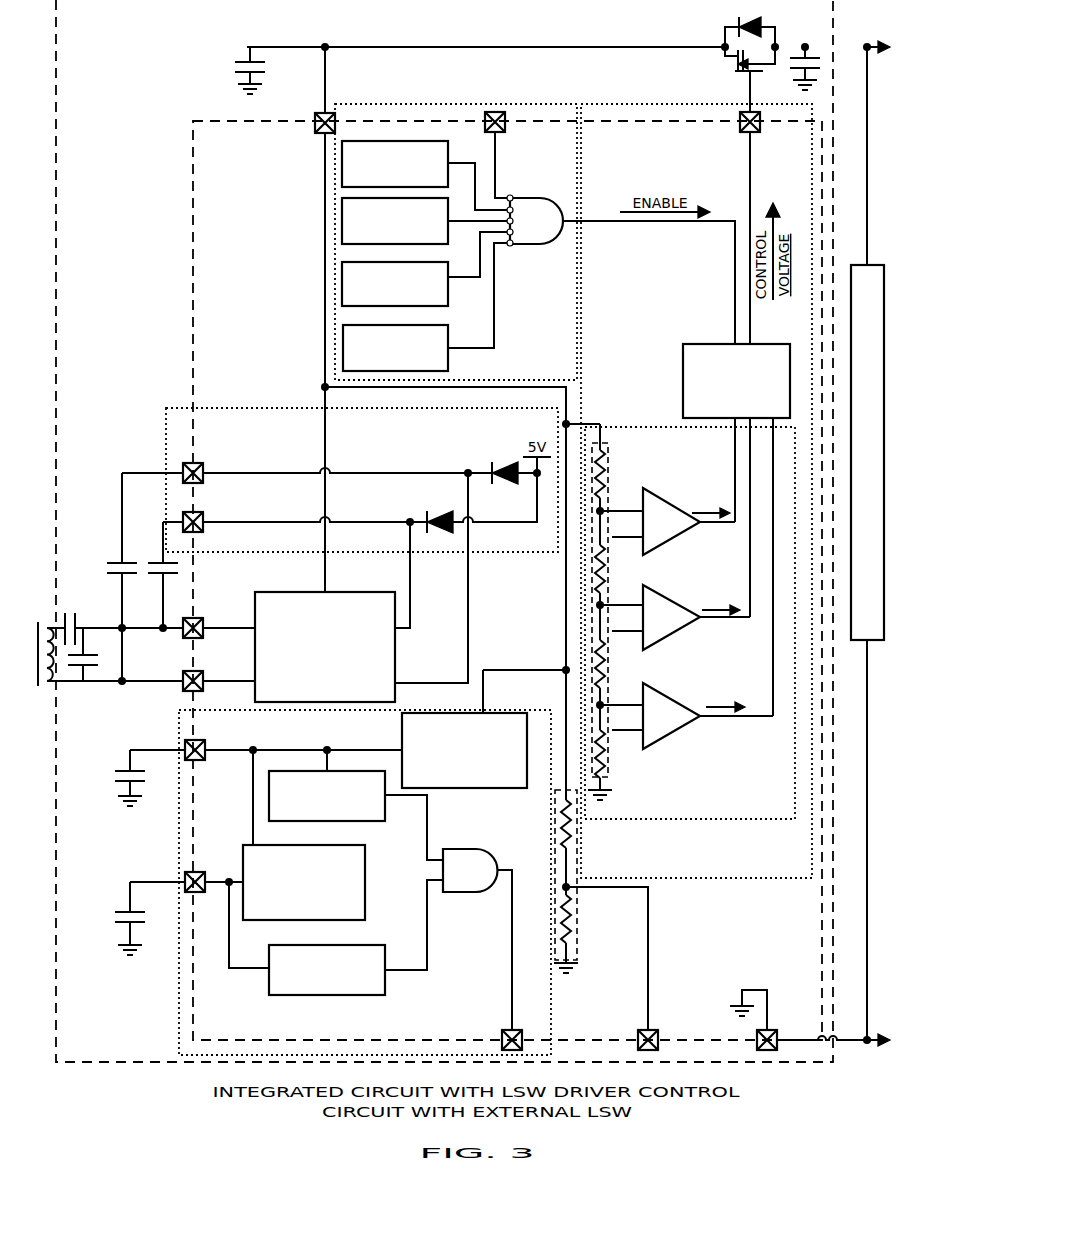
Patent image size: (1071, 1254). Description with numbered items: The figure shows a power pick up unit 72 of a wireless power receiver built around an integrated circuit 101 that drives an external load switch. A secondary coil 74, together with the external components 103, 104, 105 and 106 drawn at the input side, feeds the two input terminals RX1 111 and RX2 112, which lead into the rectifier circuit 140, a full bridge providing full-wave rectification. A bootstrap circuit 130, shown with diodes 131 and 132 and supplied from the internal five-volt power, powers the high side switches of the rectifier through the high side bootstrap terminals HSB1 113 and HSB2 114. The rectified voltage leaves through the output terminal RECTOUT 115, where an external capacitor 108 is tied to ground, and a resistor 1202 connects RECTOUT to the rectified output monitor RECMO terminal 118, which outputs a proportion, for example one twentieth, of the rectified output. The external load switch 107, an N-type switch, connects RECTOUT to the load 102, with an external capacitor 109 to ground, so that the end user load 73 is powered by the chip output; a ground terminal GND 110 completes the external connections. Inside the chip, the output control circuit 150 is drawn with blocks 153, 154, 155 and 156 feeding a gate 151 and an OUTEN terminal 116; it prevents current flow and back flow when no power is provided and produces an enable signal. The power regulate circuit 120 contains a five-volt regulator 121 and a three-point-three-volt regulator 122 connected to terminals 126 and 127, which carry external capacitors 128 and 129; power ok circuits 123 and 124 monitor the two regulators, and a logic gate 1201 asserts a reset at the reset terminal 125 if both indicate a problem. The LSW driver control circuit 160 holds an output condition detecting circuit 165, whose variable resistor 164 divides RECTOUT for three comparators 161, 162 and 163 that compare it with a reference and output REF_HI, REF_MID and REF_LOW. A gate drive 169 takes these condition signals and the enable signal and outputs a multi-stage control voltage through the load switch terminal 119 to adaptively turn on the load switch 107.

The power pick up unit 72 is at (108, 1052).
The end user load 73 is at (867, 543).
The secondary coil 74 is at (50, 683).
The integrated circuit 101 is at (226, 120).
The load 102 is at (866, 28).
The capacitor 103 is at (70, 612).
The capacitor 104 is at (90, 668).
The capacitor 105 is at (112, 560).
The capacitor 106 is at (152, 560).
The external load switch 107 is at (755, 74).
The external capacitor 108 is at (266, 68).
The external capacitor 109 is at (820, 66).
The ground terminal GND 110 is at (777, 1040).
The input terminal RX1 111 is at (205, 618).
The input terminal RX2 112 is at (205, 671).
The high side bootstrap terminal HSB1 113 is at (205, 512).
The high side bootstrap terminal HSB2 114 is at (205, 463).
The output terminal RECTOUT 115 is at (313, 133).
The OUTEN pin 116 is at (498, 112).
The rectified output monitor RECMO terminal 118 is at (658, 1040).
The load switch terminal 119 is at (742, 112).
The power regulate circuit 120 is at (353, 1034).
The 5V regulator 121 is at (452, 782).
The 3.3V regulator 122 is at (292, 911).
The power ok circuit 123 is at (315, 816).
The power ok circuit 124 is at (315, 990).
The reset terminal 125 is at (524, 1040).
The terminal 126 is at (200, 761).
The terminal 127 is at (200, 893).
The external capacitor 128 is at (122, 786).
The external capacitor 129 is at (120, 926).
The bootstrap circuit 130 is at (381, 462).
The diode 131 is at (445, 508).
The diode 132 is at (505, 458).
The rectifier circuit 140 is at (313, 665).
The output control circuit 150 is at (526, 379).
The AND gate 151 is at (548, 245).
The over voltage protection circuit 153 is at (383, 182).
The under voltage lockout circuit 154 is at (383, 239).
The thermal shutdown circuit 155 is at (383, 301).
The current limit circuit 156 is at (383, 365).
The LSW driver control circuit 160 is at (688, 877).
The comparator 161 is at (672, 695).
The comparator 162 is at (672, 596).
The comparator 163 is at (673, 486).
The variable resistor 164 is at (609, 470).
The output condition detecting circuit 165 is at (688, 813).
The gate drive 169 is at (724, 411).
The logic gate 1201 is at (490, 850).
The resistor 1202 is at (578, 918).